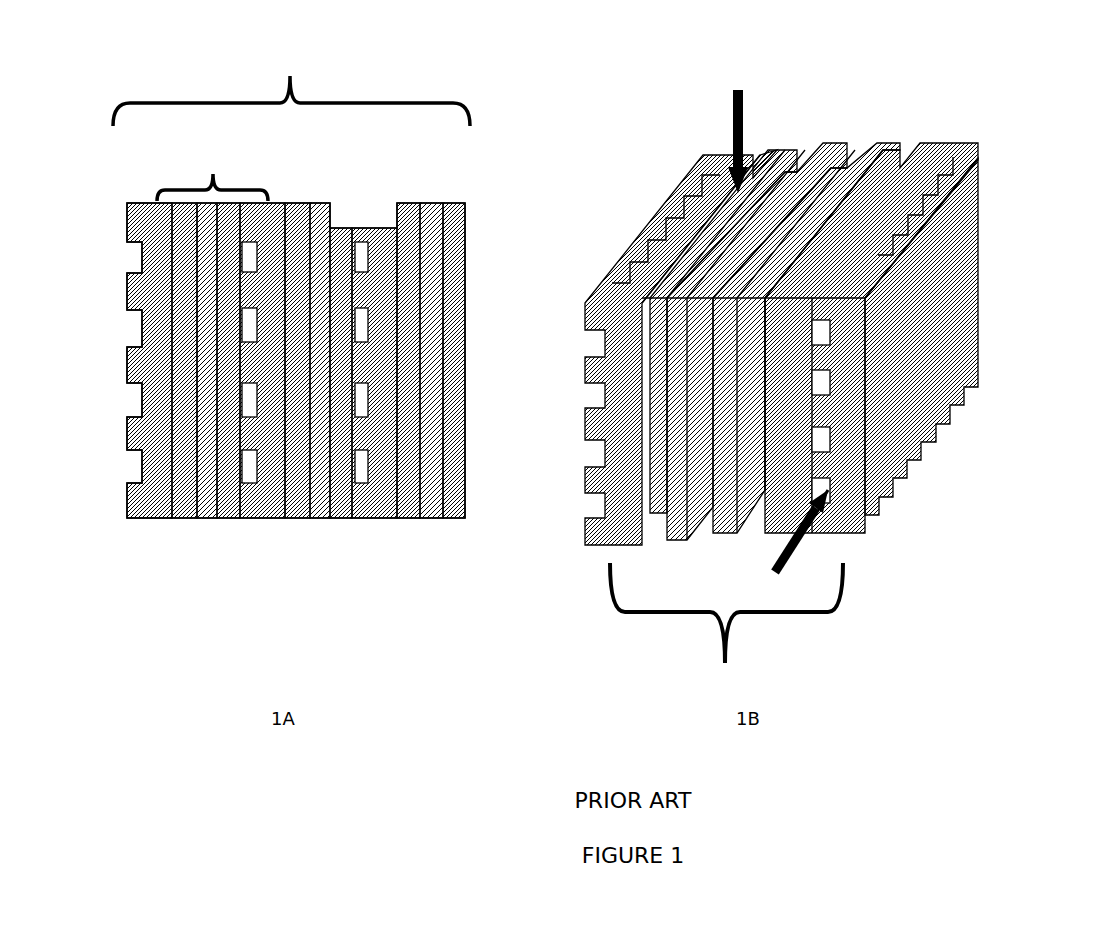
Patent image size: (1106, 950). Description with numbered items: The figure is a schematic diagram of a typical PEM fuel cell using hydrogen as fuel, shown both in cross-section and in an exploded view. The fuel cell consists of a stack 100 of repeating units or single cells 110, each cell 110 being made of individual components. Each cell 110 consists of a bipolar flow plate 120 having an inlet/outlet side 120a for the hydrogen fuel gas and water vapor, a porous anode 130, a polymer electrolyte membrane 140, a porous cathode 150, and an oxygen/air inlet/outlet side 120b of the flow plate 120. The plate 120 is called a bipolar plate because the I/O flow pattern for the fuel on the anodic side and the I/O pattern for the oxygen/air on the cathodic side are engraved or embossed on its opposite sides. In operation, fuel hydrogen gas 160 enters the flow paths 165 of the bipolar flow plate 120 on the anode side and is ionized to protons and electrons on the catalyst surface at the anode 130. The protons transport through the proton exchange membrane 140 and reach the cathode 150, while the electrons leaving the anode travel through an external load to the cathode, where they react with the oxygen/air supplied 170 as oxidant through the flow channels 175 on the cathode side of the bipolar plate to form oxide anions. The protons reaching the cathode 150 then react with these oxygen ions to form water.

The stack 100 is at (291, 78).
The single cell 110 is at (500, 418).
The bipolar flow plate 120 is at (131, 522).
The inlet/outlet side 120a is at (198, 358).
The oxygen/air inlet/outlet side 120b is at (145, 222).
The porous anode 130 is at (185, 522).
The polymer electrolyte membrane 140 is at (208, 522).
The porous cathode 150 is at (228, 522).
The fuel hydrogen gas 160 is at (730, 83).
The flow paths 165 is at (443, 275).
The oxygen/air supplied 170 is at (805, 538).
The flow channels 175 is at (813, 427).